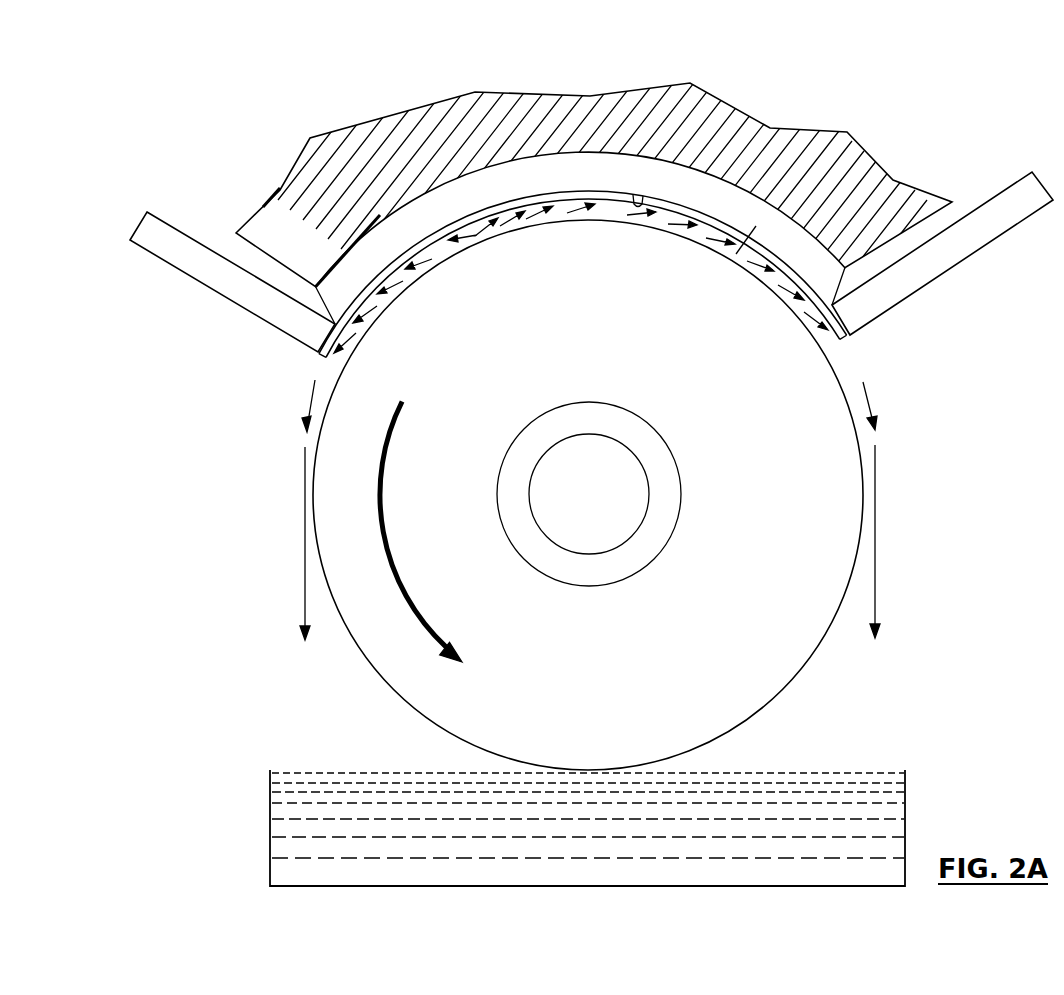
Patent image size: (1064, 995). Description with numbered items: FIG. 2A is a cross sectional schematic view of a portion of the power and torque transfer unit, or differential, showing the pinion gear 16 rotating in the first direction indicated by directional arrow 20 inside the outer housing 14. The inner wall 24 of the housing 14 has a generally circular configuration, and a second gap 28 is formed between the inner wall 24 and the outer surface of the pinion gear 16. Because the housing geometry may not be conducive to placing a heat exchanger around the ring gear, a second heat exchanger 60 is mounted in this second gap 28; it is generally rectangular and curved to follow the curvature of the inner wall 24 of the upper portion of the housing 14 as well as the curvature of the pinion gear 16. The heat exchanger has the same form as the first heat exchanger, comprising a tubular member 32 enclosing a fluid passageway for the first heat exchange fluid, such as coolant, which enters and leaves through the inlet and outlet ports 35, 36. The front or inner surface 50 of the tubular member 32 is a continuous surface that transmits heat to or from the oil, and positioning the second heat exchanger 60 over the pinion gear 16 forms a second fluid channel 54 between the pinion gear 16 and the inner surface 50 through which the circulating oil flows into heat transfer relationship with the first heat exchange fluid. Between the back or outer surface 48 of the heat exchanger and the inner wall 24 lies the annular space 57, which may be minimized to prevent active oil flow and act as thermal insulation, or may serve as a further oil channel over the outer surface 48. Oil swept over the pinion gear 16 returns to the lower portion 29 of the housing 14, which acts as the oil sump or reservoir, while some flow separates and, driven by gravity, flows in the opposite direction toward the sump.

The outer housing 14 is at (590, 307).
The pinion gear 16 is at (863, 480).
The directional arrow 20 is at (387, 535).
The inner wall 24 is at (700, 162).
The second gap 28 is at (352, 270).
The lower portion 29 is at (284, 827).
The tubular member 32 is at (322, 360).
The inlet port 35 is at (250, 268).
The outlet port 36 is at (920, 246).
The outer surface 48 is at (520, 200).
The inner surface 50 is at (640, 200).
The second fluid channel 54 is at (830, 338).
The annular space 57 is at (443, 203).
The second heat exchanger 60 is at (753, 229).